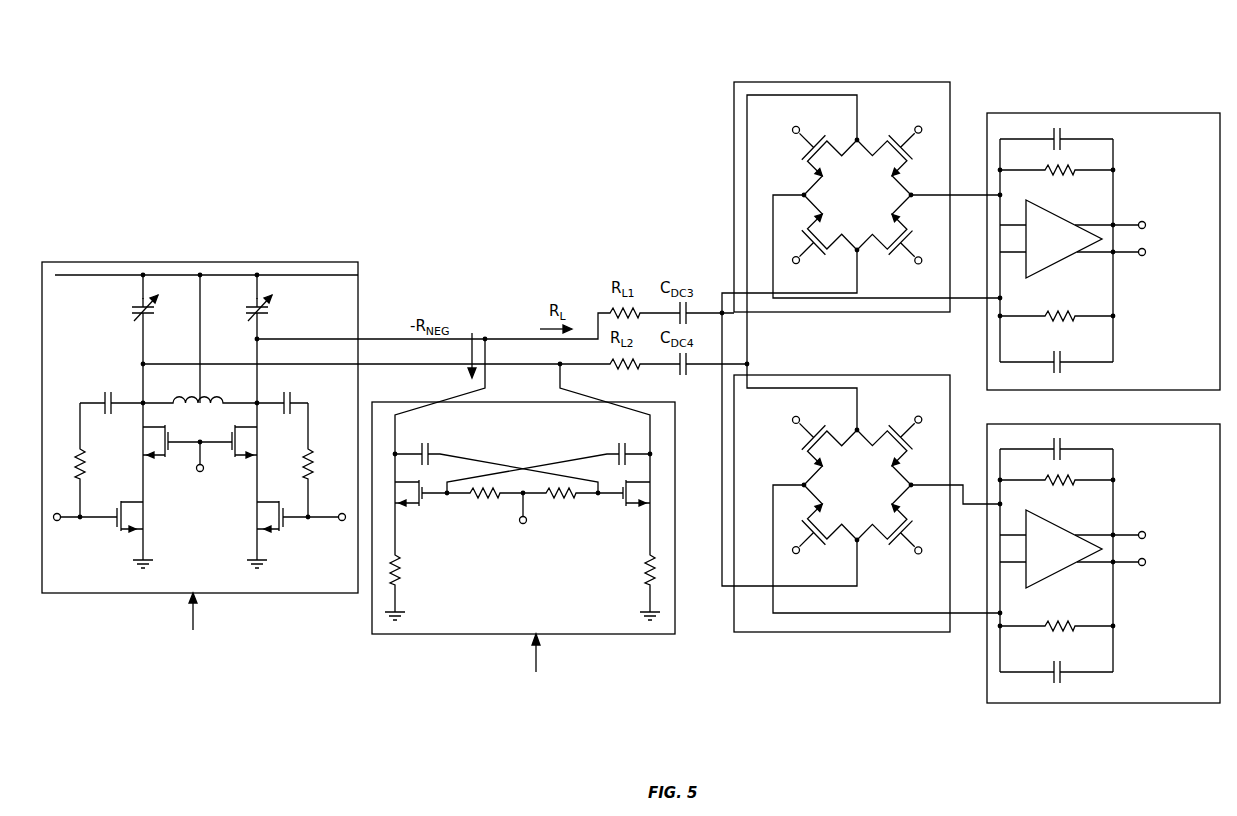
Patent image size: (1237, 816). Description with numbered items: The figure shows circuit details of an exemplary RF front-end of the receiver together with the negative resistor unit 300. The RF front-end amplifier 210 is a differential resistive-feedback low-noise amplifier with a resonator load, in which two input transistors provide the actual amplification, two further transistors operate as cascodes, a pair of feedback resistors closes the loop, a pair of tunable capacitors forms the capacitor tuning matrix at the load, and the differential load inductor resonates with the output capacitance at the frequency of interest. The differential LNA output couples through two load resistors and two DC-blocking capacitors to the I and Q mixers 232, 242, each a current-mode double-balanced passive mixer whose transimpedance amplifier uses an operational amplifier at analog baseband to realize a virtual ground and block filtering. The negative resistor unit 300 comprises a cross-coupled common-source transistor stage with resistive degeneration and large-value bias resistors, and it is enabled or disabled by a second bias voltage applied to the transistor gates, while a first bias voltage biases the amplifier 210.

The RF front-end amplifier 210 is at (307, 262).
The negative resistor unit 300 is at (610, 634).
The I mixer 232 is at (1025, 47).
The Q mixer 242 is at (930, 722).